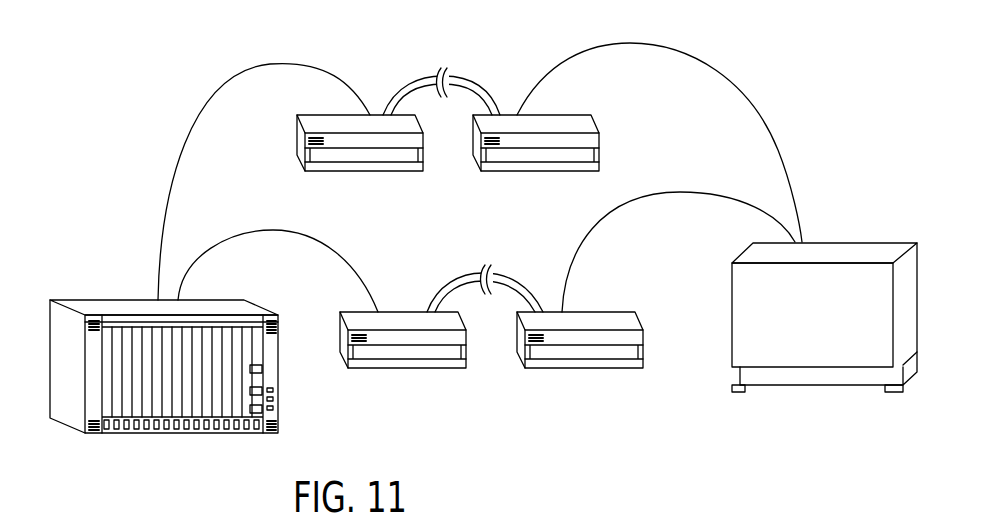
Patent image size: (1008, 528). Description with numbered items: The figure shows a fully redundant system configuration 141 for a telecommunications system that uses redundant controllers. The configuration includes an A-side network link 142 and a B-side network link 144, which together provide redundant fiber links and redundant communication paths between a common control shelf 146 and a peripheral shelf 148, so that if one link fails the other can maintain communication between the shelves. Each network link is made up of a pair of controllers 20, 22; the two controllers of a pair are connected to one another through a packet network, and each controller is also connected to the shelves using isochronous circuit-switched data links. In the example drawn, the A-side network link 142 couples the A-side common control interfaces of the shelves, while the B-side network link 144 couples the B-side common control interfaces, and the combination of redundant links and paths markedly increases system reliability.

The fully redundant system configuration 141 is at (130, 50).
The A-side network link 142 is at (478, 55).
The B-side network link 144 is at (495, 402).
The common control shelf 146 is at (185, 436).
The peripheral shelf 148 is at (822, 387).
The controller 20 is at (358, 174).
The controller 22 is at (535, 174).